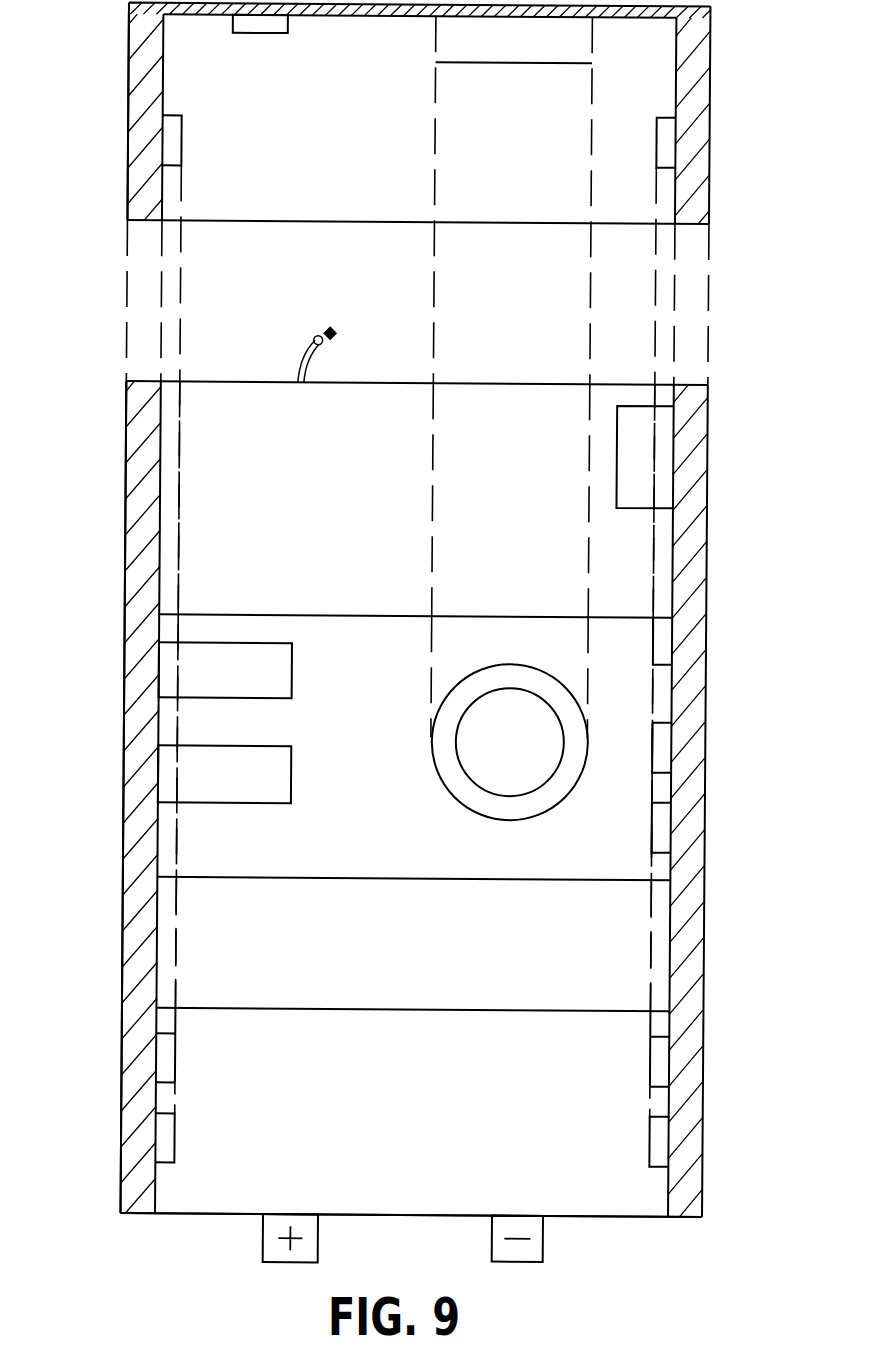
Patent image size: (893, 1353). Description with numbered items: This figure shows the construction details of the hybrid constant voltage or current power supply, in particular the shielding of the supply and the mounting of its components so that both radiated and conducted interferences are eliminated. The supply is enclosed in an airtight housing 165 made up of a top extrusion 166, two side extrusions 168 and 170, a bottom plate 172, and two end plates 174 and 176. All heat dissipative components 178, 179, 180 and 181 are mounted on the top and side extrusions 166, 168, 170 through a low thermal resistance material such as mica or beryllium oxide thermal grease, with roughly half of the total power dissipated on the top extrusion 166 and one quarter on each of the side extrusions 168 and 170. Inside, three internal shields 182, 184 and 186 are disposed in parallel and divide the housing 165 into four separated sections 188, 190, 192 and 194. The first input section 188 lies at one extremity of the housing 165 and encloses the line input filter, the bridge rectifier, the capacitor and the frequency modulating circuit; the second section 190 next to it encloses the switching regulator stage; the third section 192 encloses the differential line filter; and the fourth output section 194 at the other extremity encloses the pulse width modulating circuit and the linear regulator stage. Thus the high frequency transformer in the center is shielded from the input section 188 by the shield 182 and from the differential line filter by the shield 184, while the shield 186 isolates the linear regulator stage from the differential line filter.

The airtight housing 165 is at (367, 176).
The top extrusion 166 is at (390, 18).
The side extrusion 168 is at (693, 53).
The side extrusion 170 is at (146, 152).
The bottom plate 172 is at (543, 224).
The end plate 174 is at (533, 381).
The end plate 176 is at (434, 1211).
The heat dissipative component 178 is at (273, 23).
The heat dissipative component 179 is at (640, 446).
The heat dissipative component 180 is at (264, 683).
The heat dissipative component 181 is at (535, 55).
The internal shield 182 is at (528, 613).
The internal shield 184 is at (426, 875).
The internal shield 186 is at (527, 1009).
The first input section 188 is at (343, 502).
The second section 190 is at (379, 712).
The third section 192 is at (433, 962).
The fourth output section 194 is at (434, 1117).